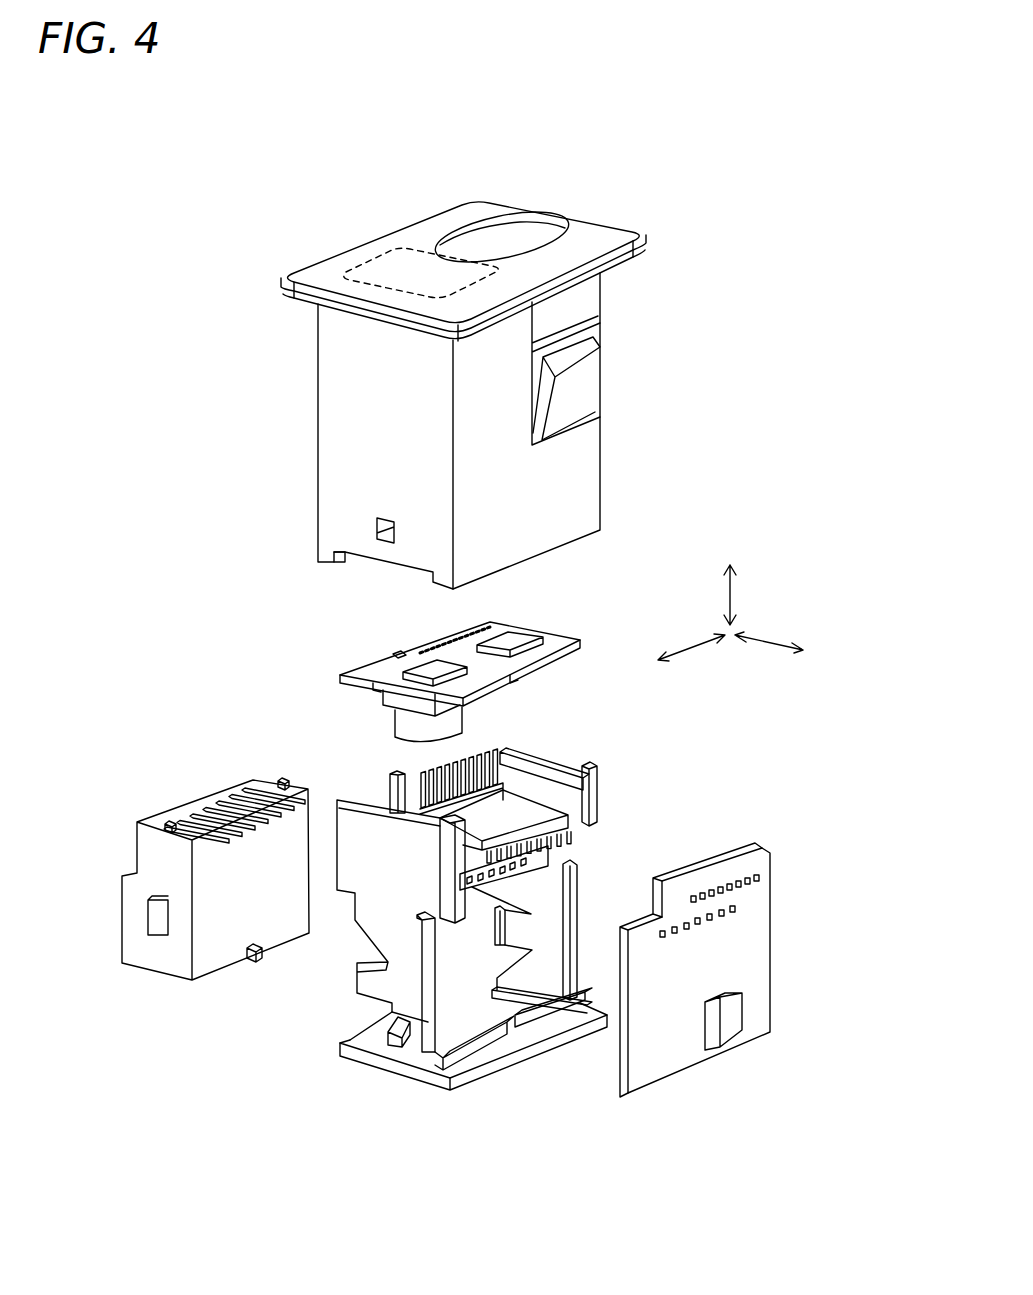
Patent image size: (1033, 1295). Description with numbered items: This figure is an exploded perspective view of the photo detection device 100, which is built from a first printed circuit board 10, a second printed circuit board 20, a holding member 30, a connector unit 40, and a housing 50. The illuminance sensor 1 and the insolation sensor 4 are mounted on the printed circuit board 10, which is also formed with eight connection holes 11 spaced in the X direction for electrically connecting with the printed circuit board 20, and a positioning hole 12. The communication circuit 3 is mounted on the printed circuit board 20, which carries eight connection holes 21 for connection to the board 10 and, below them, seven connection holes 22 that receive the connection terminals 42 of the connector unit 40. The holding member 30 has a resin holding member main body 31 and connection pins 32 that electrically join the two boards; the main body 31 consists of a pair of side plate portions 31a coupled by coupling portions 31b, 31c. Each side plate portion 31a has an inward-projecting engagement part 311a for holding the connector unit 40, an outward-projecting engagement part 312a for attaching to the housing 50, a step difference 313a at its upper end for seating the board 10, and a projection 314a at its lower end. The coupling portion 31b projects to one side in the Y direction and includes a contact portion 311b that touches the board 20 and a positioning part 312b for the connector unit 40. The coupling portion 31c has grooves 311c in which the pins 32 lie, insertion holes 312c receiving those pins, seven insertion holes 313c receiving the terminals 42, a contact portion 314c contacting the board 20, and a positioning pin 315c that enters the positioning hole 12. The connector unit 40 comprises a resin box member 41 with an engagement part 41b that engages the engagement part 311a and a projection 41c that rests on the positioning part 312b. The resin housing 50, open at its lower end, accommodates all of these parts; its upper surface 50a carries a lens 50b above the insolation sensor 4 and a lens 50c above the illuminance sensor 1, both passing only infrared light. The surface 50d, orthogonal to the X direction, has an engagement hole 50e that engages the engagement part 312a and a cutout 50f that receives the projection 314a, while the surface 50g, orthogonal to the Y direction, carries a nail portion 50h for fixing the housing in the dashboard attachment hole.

The photo detection device 100 is at (493, 149).
The housing 50 is at (585, 490).
The upper surface 50a is at (600, 236).
The lens 50b is at (540, 230).
The lens 50c is at (390, 258).
The surface 50d is at (342, 412).
The engagement hole 50e is at (376, 526).
The cutout 50f is at (338, 568).
The surface 50g is at (575, 527).
The nail portion 50h is at (608, 392).
The printed circuit board 10 is at (372, 667).
The illuminance sensor 1 is at (420, 655).
The connection hole 11 is at (437, 652).
The positioning hole 12 is at (395, 655).
The insolation sensor 4 is at (520, 637).
The holding member 30 is at (600, 785).
The holding member main body 31 is at (600, 807).
The side plate portions 31a is at (545, 918).
The coupling portion 31b is at (510, 1040).
The coupling portion 31c is at (520, 800).
The connection pin 32 is at (472, 760).
The engagement part 311a is at (497, 930).
The contact portion 311b is at (480, 1052).
The groove 311c is at (428, 775).
The engagement part 312a is at (395, 1042).
The positioning part 312b is at (545, 1020).
The insertion hole 312c is at (490, 872).
The step difference 313a is at (568, 768).
The insertion hole 313c is at (566, 876).
The projection 314a is at (428, 1080).
The contact portion 314c is at (580, 820).
The positioning pin 315c is at (390, 790).
The connector unit 40 is at (143, 957).
The box member 41 is at (210, 965).
The engagement part 41b is at (158, 930).
The projection 41c is at (255, 960).
The connection terminal 42 is at (172, 822).
The printed circuit board 20 is at (680, 1062).
The connection hole 21 is at (697, 892).
The connection hole 22 is at (660, 930).
The communication circuit 3 is at (735, 1035).